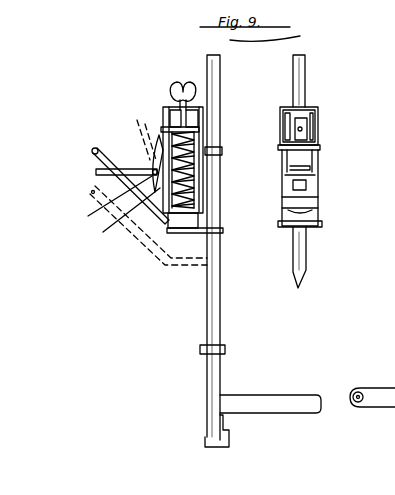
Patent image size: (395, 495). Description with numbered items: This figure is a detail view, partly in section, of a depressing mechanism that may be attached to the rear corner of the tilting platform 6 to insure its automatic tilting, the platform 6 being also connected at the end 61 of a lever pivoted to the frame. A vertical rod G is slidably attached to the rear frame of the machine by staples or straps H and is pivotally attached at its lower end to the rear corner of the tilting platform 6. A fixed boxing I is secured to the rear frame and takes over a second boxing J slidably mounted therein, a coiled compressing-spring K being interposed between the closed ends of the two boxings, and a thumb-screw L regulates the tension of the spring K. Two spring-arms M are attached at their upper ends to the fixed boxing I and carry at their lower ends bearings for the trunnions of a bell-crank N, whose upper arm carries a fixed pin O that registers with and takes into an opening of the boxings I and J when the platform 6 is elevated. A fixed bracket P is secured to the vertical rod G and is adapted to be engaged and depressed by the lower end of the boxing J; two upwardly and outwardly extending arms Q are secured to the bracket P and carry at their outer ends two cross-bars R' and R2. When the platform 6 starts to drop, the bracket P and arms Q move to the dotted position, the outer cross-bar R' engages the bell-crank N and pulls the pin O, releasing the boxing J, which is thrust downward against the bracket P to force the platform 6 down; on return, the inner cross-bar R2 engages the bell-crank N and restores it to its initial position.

The vertical rod G is at (222, 251).
The staples or straps H is at (222, 152).
The tilting platform 6 is at (294, 394).
The end of lever 61 is at (372, 408).
The fixed boxing I is at (203, 128).
The thumb-screw L is at (190, 66).
The coiled compressing-spring K is at (200, 181).
The second boxing J is at (206, 214).
The fixed pin O is at (152, 150).
The spring-arms M is at (158, 126).
The outer cross-bar R' is at (168, 179).
The inner cross-bar R2 is at (287, 170).
The bell-crank N is at (343, 179).
The arms Q is at (358, 197).
The fixed bracket P is at (285, 228).